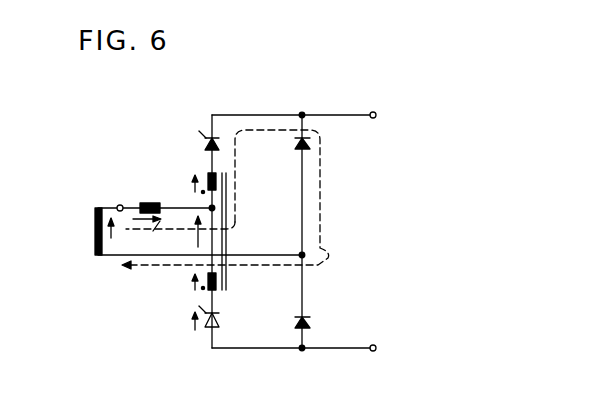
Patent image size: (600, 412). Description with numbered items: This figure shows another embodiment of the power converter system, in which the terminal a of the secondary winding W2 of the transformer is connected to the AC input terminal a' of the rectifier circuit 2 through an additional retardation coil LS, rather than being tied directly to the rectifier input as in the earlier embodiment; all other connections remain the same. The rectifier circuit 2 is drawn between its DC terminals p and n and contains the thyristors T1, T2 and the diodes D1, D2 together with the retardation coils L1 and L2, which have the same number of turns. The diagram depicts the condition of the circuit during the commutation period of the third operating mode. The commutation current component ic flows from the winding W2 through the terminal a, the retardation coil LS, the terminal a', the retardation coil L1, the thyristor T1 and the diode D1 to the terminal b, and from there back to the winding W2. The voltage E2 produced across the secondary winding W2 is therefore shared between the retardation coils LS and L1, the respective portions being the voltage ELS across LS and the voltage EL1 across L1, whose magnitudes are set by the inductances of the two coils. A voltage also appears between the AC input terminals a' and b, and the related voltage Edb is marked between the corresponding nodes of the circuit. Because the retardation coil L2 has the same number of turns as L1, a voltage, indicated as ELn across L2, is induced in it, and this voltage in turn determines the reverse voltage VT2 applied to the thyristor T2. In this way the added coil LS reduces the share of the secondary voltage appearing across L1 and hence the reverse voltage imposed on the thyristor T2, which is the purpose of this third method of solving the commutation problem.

The rectifier circuit 2 is at (266, 96).
The positive DC terminal p is at (373, 111).
The negative DC terminal n is at (375, 346).
The thyristor T1 is at (201, 133).
The thyristor T2 is at (220, 322).
The diode D1 is at (310, 142).
The second diode D2 is at (310, 322).
The retardation coil L1 is at (214, 171).
The retardation coil L2 is at (218, 288).
The retardation coil LS is at (150, 203).
The secondary winding W2 is at (98, 208).
The terminal a is at (105, 179).
The AC input terminal a' is at (190, 190).
The terminal b is at (300, 253).
The commutation current component ic is at (320, 284).
The secondary winding voltage E2 is at (112, 257).
The voltage across retardation coil LS ELS is at (120, 250).
The voltage across reactor winding L2 ELn is at (192, 274).
The voltage across retardation coil L1 EL1 is at (194, 172).
The voltage between d and b Edb is at (197, 243).
The reverse voltage VT2 is at (195, 331).